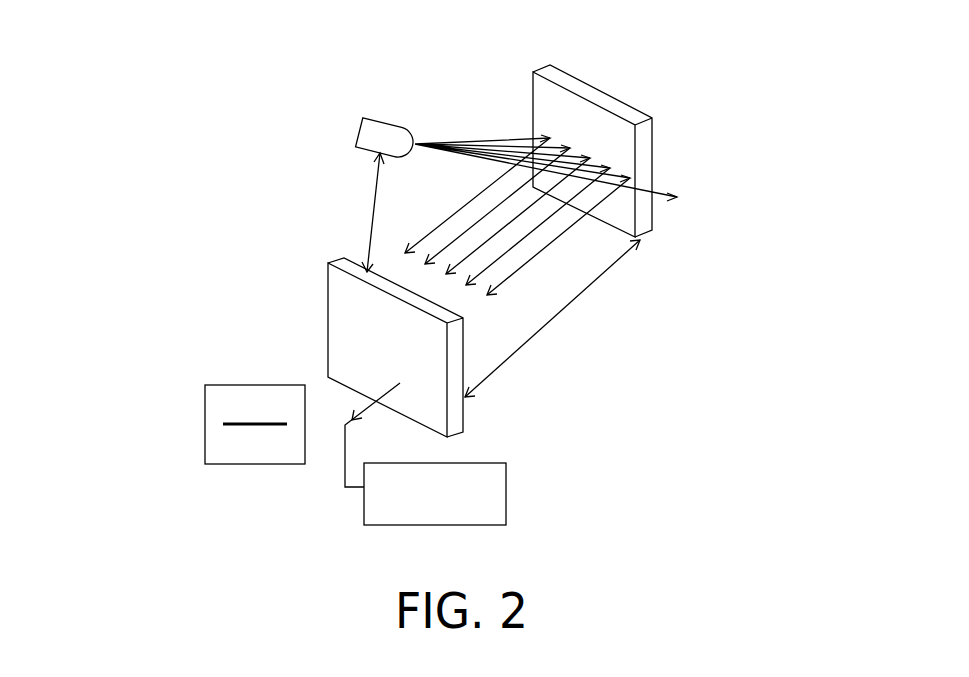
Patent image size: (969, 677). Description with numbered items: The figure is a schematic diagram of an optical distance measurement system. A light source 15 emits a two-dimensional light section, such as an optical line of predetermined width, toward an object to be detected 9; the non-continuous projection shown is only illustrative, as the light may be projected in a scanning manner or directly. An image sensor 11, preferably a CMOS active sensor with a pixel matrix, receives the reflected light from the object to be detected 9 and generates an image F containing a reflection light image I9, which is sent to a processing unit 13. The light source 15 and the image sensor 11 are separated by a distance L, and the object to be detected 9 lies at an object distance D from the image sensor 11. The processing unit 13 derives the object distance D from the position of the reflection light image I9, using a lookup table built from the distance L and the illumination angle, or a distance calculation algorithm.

The light source 15 is at (380, 120).
The object to be detected 9 is at (628, 115).
The image sensor 11 is at (347, 262).
The processing unit 13 is at (506, 489).
The distance L is at (365, 212).
The object distance D is at (552, 318).
The image F is at (358, 409).
The reflection light image I9 is at (223, 425).